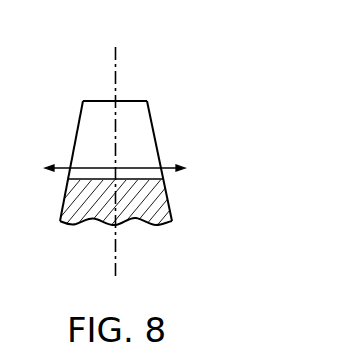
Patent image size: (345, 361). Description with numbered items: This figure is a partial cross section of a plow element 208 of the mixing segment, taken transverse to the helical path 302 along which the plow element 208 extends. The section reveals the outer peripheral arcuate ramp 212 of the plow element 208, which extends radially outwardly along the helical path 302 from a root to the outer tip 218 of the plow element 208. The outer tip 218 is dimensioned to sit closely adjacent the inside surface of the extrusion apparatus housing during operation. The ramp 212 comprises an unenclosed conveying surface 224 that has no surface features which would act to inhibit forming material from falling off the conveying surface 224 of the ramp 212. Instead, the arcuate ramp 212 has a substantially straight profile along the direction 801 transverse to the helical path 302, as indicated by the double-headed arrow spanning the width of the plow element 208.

The helical path 302 is at (114, 58).
The outer tip 218 is at (126, 101).
The arcuate ramp 212 is at (93, 118).
The conveying surface 224 is at (115, 147).
The plow element 208 is at (138, 147).
The direction transverse to the helical path 801 is at (60, 167).